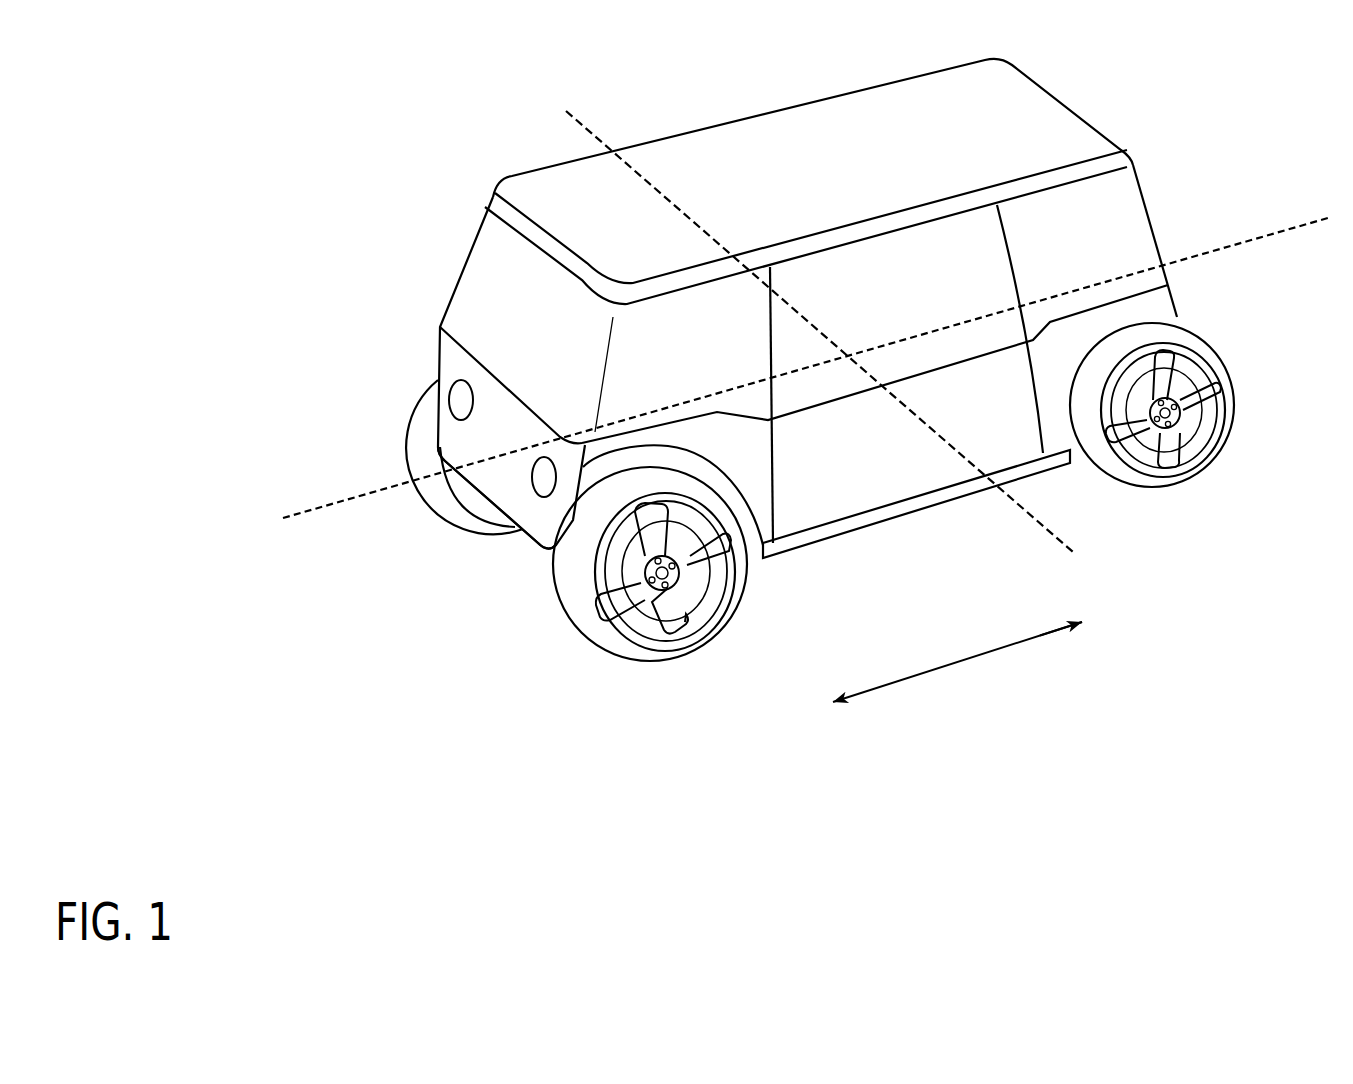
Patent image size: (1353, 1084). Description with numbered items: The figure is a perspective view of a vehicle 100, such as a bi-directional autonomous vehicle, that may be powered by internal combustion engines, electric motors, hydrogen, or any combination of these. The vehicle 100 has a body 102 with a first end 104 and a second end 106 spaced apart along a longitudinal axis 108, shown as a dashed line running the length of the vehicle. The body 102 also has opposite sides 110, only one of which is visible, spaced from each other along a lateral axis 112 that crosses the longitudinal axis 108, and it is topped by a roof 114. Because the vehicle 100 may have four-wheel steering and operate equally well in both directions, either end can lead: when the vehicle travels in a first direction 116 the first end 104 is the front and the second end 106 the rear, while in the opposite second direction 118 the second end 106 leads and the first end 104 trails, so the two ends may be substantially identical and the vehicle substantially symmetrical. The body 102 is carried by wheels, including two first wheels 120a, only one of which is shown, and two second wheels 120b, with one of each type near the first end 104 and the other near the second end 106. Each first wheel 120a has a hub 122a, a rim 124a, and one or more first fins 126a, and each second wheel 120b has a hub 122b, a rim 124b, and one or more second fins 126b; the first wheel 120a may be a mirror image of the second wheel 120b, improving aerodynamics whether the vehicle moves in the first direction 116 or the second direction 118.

The vehicle 100 is at (445, 176).
The body 102 is at (380, 300).
The first end 104 is at (546, 516).
The second end 106 is at (1150, 125).
The longitudinal axis 108 is at (1290, 230).
The sides 110 is at (880, 467).
The lateral axis 112 is at (1037, 507).
The roof 114 is at (852, 181).
The first direction 116 is at (939, 672).
The second direction 118 is at (1087, 619).
The first wheels 120a is at (580, 638).
The second wheels 120b is at (433, 510).
The hub 122a is at (672, 578).
The hub 122b is at (1187, 420).
The rim 124a is at (637, 652).
The rim 124b is at (1217, 367).
The first fins 126a is at (675, 630).
The second fins 126b is at (1177, 463).